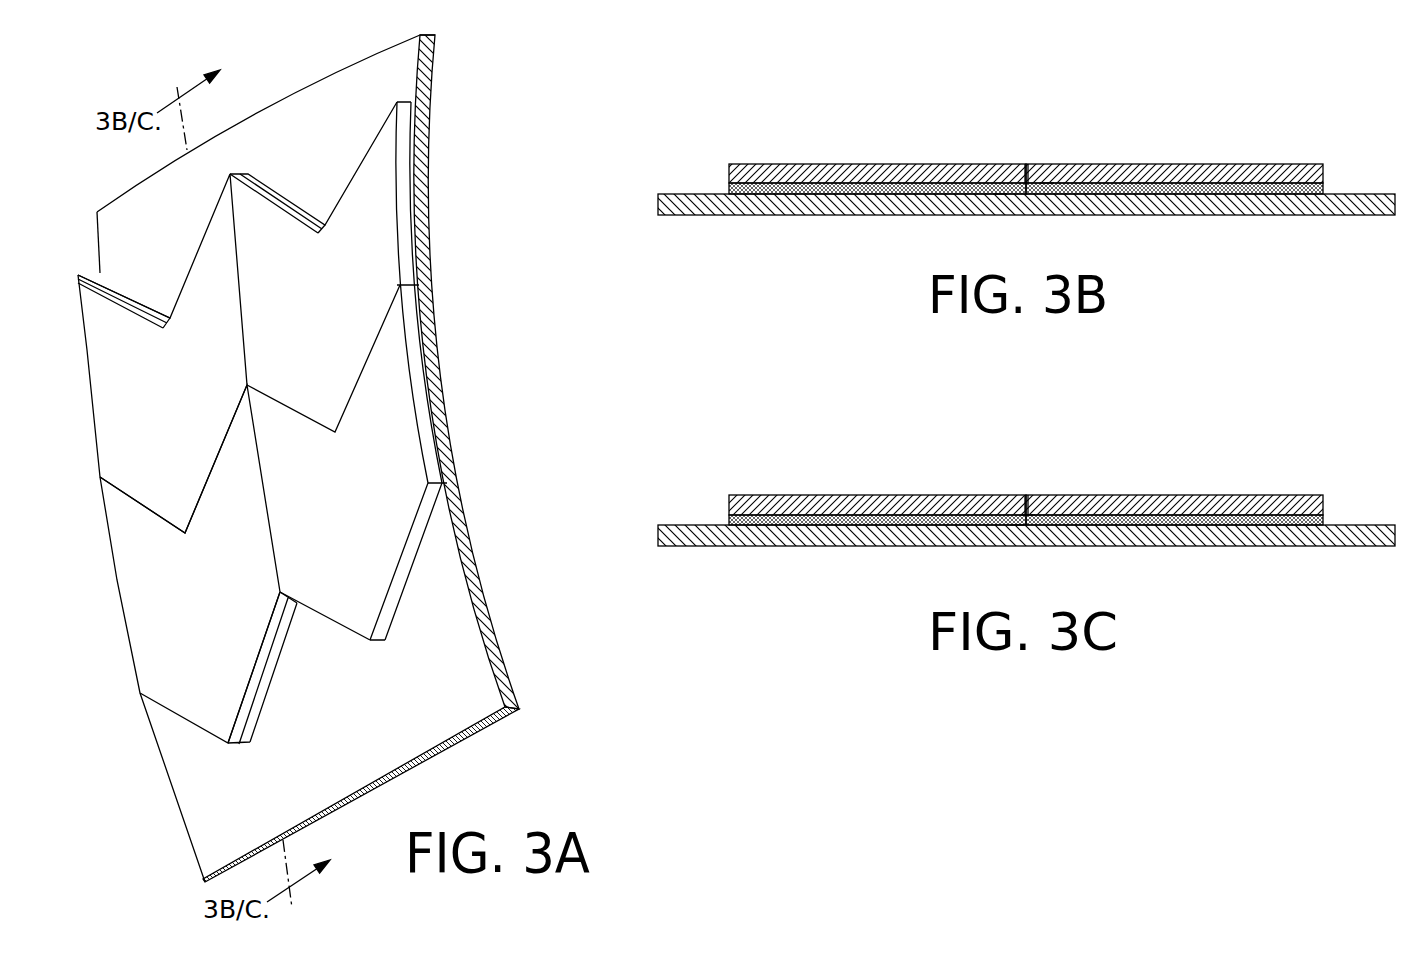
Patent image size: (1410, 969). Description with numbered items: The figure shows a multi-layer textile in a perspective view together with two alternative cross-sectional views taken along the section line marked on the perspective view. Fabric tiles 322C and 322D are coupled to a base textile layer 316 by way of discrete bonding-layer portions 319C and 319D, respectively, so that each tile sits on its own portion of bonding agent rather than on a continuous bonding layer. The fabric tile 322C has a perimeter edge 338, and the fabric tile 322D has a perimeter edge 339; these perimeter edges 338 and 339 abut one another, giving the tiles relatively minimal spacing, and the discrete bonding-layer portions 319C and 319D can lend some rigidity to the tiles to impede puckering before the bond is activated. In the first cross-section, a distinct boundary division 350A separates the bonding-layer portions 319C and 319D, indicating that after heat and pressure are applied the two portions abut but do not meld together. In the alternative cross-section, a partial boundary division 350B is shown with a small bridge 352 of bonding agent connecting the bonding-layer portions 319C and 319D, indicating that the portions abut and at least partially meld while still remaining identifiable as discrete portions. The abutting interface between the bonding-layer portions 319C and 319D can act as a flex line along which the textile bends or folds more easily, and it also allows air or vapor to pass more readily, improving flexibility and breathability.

In FIG. 3A, the base textile layer 316 is at (205, 808).
In FIG. 3B, the base textile layer 316 is at (680, 192).
In FIG. 3C, the base textile layer 316 is at (1026, 535).
In FIG. 3A, the discrete bonding-layer portion 319C is at (118, 292).
In FIG. 3B, the discrete bonding-layer portion 319C is at (728, 188).
In FIG. 3C, the discrete bonding-layer portion 319C is at (728, 520).
In FIG. 3A, the discrete bonding-layer portion 319D is at (278, 647).
In FIG. 3B, the discrete bonding-layer portion 319D is at (1325, 188).
In FIG. 3C, the discrete bonding-layer portion 319D is at (1325, 520).
In FIG. 3A, the fabric tile 322C is at (157, 423).
In FIG. 3B, the fabric tile 322C is at (815, 164).
In FIG. 3C, the fabric tile 322C is at (877, 505).
In FIG. 3A, the fabric tile 322D is at (180, 620).
In FIG. 3B, the fabric tile 322D is at (1118, 164).
In FIG. 3C, the fabric tile 322D is at (1174, 505).
In FIG. 3B, the perimeter edge 338 is at (1033, 164).
In FIG. 3C, the perimeter edge 338 is at (1026, 505).
In FIG. 3B, the perimeter edge 339 is at (1000, 185).
In FIG. 3B, the distinct boundary division 350A is at (1047, 185).
In FIG. 3C, the partial boundary division 350B is at (1028, 517).
In FIG. 3C, the small bridge of bonding agent 352 is at (1017, 525).